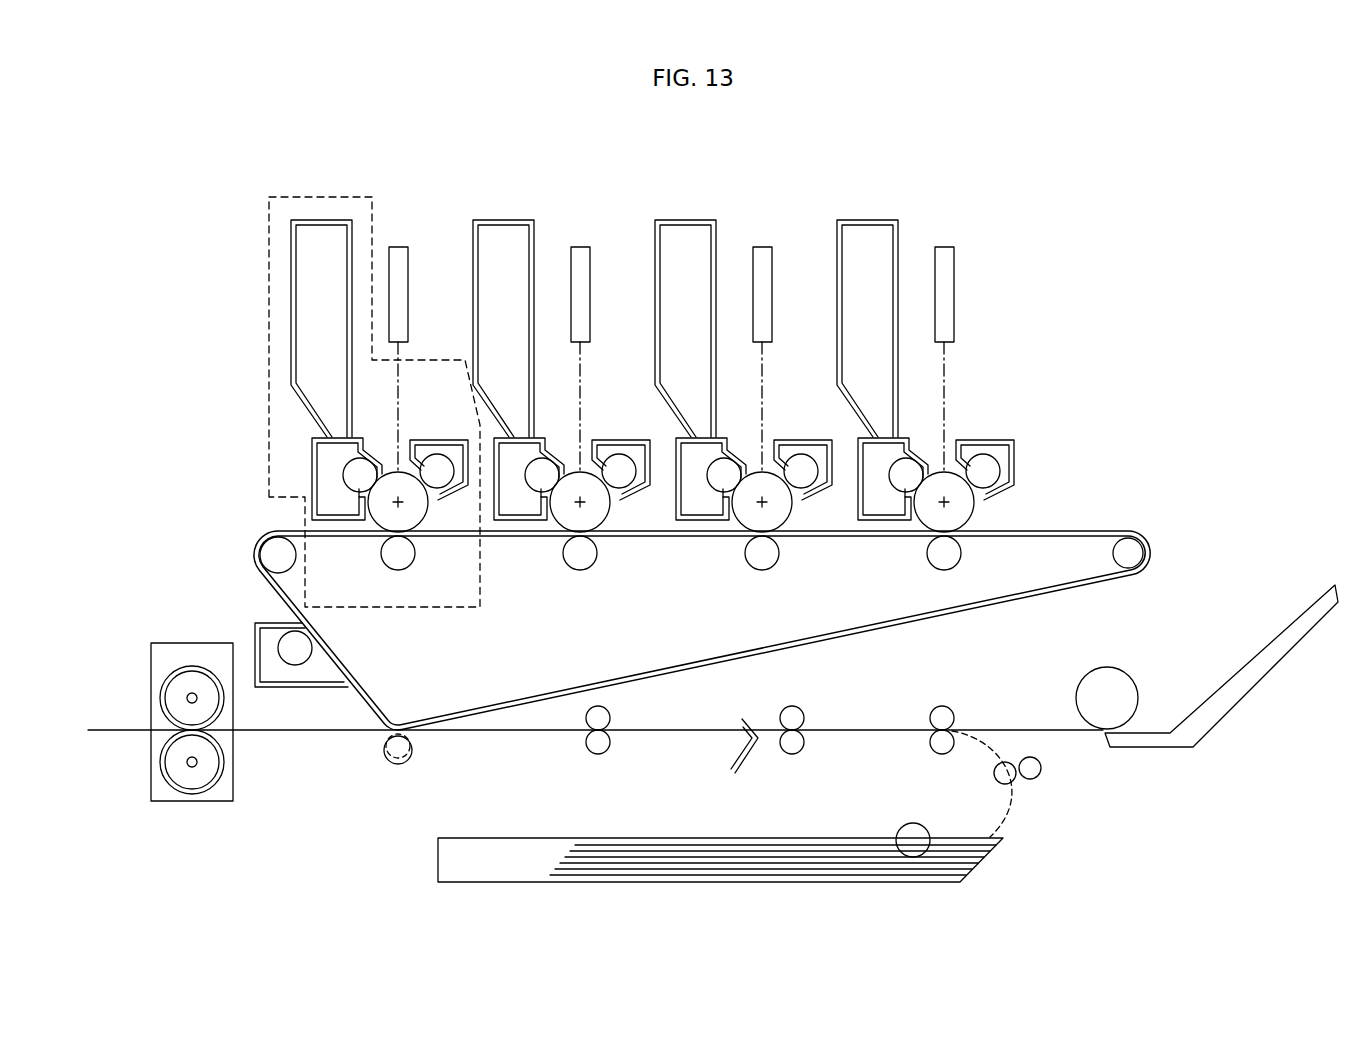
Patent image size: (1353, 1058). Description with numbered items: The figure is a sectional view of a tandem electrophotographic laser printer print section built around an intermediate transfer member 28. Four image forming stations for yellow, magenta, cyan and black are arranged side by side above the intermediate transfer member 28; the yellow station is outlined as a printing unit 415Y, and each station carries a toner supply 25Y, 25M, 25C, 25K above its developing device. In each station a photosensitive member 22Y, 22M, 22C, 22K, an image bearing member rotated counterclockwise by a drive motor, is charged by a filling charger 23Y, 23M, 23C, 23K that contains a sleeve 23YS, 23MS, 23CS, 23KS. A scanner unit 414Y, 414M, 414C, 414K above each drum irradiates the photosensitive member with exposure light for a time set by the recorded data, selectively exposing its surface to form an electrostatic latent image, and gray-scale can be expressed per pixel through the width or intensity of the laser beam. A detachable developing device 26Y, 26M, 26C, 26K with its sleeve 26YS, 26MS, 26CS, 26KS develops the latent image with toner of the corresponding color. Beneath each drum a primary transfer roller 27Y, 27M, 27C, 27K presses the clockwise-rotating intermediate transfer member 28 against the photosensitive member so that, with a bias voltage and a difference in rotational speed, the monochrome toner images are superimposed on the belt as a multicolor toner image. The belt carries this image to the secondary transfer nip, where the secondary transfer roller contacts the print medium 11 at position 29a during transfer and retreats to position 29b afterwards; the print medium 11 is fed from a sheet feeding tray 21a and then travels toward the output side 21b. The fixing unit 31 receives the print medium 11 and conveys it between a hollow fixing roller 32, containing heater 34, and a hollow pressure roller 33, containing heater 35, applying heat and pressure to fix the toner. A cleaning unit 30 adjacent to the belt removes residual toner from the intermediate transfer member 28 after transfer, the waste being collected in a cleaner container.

The print medium 11 is at (672, 852).
The sheet feeding tray 21a is at (790, 838).
The sheet discharge tray 21b is at (1253, 683).
The photosensitive member 22Y is at (398, 484).
The photosensitive member 22M is at (593, 453).
The photosensitive member 22C is at (775, 453).
The photosensitive member 22K is at (957, 454).
The filling charger 23Y is at (453, 493).
The filling charger 23M is at (626, 509).
The filling charger 23C is at (807, 508).
The filling charger 23K is at (1024, 470).
The sleeve 23YS is at (437, 479).
The sleeve 23MS is at (615, 529).
The sleeve 23CS is at (800, 530).
The sleeve 23KS is at (1013, 512).
The toner hopper (yellow) 25Y is at (333, 219).
The toner hopper (magenta) 25M is at (508, 301).
The toner hopper (cyan) 25C is at (689, 301).
The toner hopper (black) 25K is at (871, 301).
The developing device 26Y is at (312, 488).
The developing device 26M is at (514, 539).
The developing device 26C is at (698, 539).
The developing device 26K is at (883, 529).
The sleeve 26YS is at (356, 476).
The sleeve 26MS is at (540, 526).
The sleeve 26CS is at (725, 527).
The sleeve 26KS is at (905, 524).
The primary transfer roller 27Y is at (391, 555).
The primary transfer roller 27M is at (584, 585).
The primary transfer roller 27C is at (770, 585).
The primary transfer roller 27K is at (961, 567).
The intermediate transfer member 28 is at (588, 683).
The position 29a is at (413, 747).
The position 29b is at (398, 765).
The cleaning unit 30 is at (300, 689).
The fixing unit 31 is at (234, 785).
The fixing roller 32 is at (192, 665).
The pressure roller 33 is at (192, 795).
The heater 34 is at (185, 700).
The heater 35 is at (185, 764).
The scanner unit 414Y is at (398, 246).
The scanner unit 414M is at (585, 332).
The scanner unit 414C is at (767, 332).
The scanner unit 414K is at (949, 332).
The printing unit 415Y is at (268, 216).